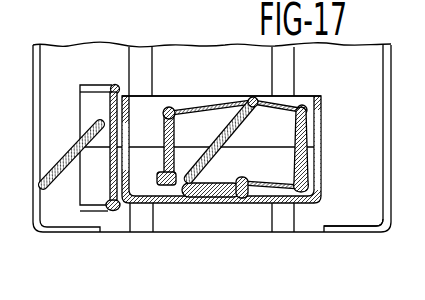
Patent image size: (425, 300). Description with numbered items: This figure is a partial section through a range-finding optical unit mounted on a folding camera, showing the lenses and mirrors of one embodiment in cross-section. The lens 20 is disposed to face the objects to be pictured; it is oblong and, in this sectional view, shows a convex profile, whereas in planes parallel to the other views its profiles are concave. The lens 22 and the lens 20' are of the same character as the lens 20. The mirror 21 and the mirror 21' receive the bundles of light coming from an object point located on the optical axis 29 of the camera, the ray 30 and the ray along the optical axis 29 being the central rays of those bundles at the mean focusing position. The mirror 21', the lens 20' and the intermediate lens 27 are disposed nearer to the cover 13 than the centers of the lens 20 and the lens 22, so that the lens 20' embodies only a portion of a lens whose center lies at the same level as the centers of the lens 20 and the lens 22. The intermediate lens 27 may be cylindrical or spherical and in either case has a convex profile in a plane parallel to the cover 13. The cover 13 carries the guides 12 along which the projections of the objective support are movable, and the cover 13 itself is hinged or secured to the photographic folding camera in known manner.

The guides 12 is at (280, 222).
The cover 13 is at (365, 215).
The lens 20 is at (202, 221).
The lens 20' is at (156, 136).
The mirror 21 is at (230, 141).
The mirror 21' is at (72, 145).
The lens 22 is at (300, 127).
The intermediate lens 27 is at (113, 178).
The optical axis 29 is at (213, 147).
The ray of light 30 is at (80, 205).